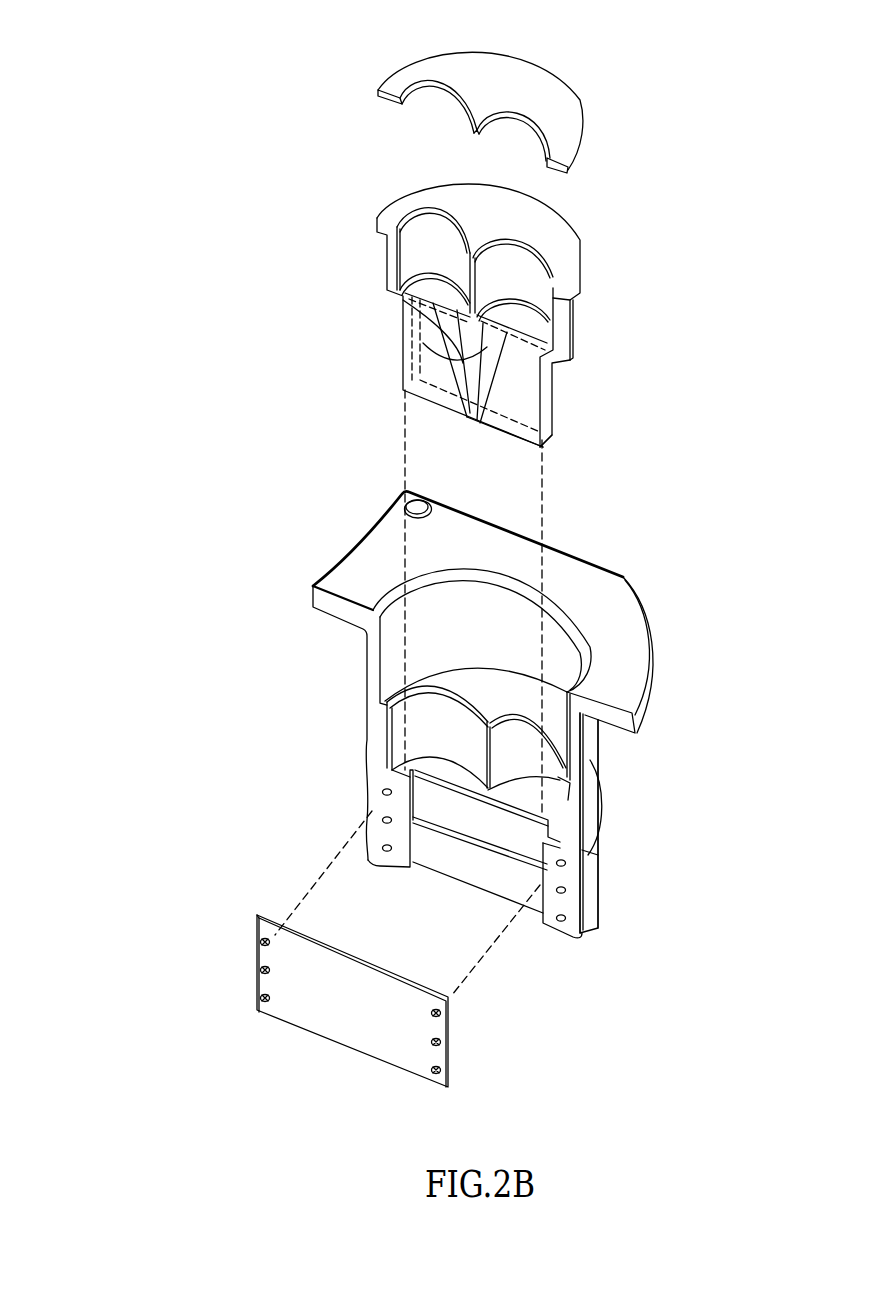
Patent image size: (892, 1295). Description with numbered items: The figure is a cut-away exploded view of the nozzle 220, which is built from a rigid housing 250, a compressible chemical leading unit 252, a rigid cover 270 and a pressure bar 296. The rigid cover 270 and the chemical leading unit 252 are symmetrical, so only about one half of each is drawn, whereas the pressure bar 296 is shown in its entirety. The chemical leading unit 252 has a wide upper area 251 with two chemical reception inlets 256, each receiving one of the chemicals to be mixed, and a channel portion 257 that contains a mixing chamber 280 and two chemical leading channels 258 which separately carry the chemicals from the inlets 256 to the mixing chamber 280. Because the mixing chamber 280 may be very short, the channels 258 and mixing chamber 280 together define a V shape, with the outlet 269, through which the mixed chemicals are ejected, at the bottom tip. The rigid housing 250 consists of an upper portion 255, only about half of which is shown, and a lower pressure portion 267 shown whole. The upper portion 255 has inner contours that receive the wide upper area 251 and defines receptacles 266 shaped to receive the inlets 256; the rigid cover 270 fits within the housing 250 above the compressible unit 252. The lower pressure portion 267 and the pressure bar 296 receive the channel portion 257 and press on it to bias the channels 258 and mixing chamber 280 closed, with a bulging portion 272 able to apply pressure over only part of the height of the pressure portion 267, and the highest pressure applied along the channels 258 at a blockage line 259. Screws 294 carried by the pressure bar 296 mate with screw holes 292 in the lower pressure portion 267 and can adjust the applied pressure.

The nozzle 220 is at (238, 70).
The rigid cover 270 is at (565, 114).
The chemical leading unit 252 is at (483, 200).
The chemical reception inlets 256 is at (427, 236).
The chemical leading channels 258 is at (400, 297).
The blockage line 259 is at (406, 341).
The outlet 269 is at (403, 423).
The wide upper area 251 is at (562, 350).
The channel portion 257 is at (548, 440).
The mixing chamber 280 is at (527, 445).
The rigid housing 250 is at (705, 600).
The receptacles 266 is at (420, 737).
The upper portion 255 is at (625, 752).
The lower pressure portion 267 is at (593, 868).
The bulging portion 272 is at (508, 887).
The screw holes 292 is at (385, 848).
The pressure bar 296 is at (293, 1010).
The screws 294 is at (442, 1015).